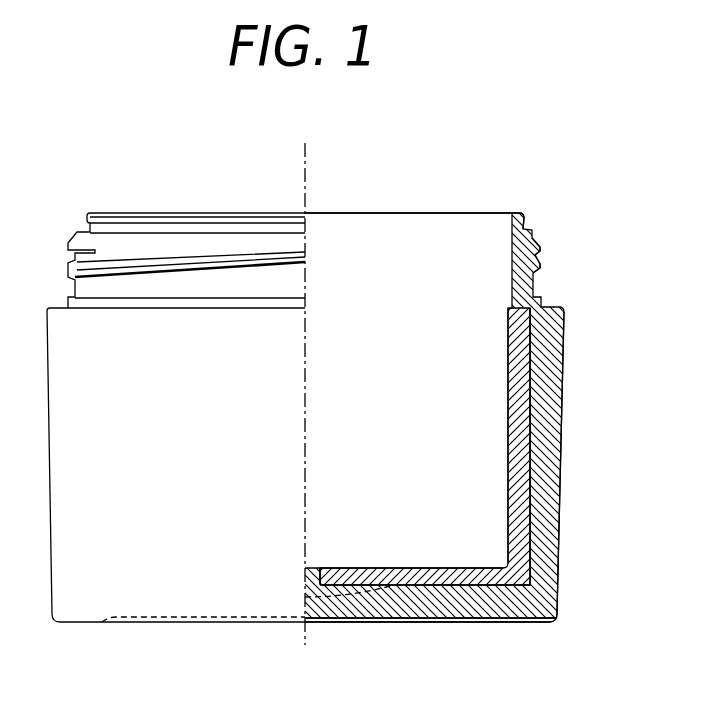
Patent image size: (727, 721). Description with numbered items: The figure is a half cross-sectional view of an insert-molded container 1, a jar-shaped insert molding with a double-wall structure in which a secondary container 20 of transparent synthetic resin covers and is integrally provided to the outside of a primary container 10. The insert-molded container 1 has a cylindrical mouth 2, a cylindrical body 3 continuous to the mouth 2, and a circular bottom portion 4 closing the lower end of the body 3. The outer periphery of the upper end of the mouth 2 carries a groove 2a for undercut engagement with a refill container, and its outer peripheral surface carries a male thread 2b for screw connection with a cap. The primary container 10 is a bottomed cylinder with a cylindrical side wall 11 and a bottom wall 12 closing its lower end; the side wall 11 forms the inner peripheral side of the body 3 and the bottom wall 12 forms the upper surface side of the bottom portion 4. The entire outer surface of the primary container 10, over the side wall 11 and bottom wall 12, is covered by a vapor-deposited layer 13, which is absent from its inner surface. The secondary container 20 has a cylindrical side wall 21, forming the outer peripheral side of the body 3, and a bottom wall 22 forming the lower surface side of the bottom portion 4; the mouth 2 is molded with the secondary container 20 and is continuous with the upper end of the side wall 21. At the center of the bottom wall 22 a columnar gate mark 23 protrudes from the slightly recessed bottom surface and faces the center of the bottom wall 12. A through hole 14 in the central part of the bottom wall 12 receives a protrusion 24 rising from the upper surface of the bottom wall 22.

The insert-molded container 1 is at (551, 113).
The mouth 2 is at (545, 249).
The groove 2a is at (526, 224).
The male thread 2b is at (533, 273).
The body 3 is at (565, 410).
The bottom portion 4 is at (457, 623).
The primary container 10 is at (508, 378).
The side wall 11 is at (517, 447).
The bottom wall 12 is at (412, 578).
The vapor-deposited layer 13 is at (533, 532).
The through hole 14 is at (318, 570).
The secondary container 20 is at (563, 497).
The side wall 21 is at (548, 450).
The bottom wall 22 is at (372, 610).
The gate mark 23 is at (310, 622).
The protrusion 24 is at (314, 575).